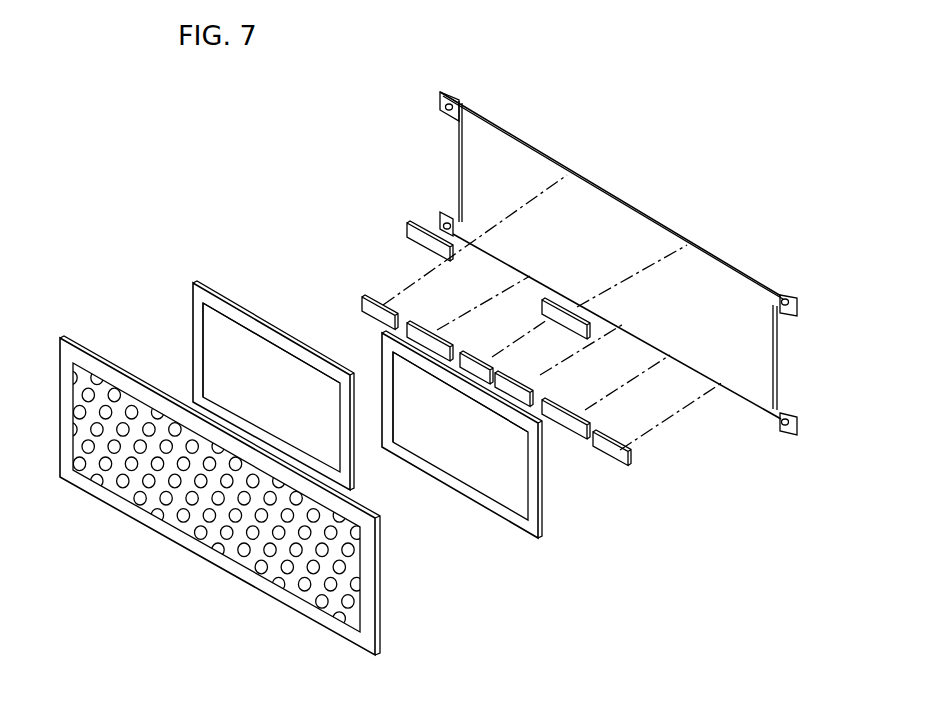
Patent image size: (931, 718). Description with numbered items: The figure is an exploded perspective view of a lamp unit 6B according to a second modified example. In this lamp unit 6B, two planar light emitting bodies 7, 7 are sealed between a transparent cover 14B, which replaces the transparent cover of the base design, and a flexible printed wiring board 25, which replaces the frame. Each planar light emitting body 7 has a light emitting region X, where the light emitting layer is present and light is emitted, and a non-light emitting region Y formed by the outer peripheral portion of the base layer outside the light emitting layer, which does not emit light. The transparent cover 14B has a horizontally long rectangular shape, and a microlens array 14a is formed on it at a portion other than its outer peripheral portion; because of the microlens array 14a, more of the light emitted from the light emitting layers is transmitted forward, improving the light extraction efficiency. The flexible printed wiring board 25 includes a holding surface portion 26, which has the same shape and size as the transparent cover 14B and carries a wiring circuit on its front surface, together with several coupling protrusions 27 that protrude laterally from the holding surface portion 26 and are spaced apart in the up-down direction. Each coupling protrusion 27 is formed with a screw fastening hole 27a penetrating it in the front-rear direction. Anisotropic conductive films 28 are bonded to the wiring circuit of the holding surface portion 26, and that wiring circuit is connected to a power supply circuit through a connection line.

The lamp unit 6B is at (90, 131).
The planar light emitting body 7 is at (213, 295).
The light emitting region X is at (220, 337).
The non-light emitting region Y is at (199, 359).
The transparent cover 14B is at (220, 495).
The microlens array 14a is at (242, 553).
The flexible printed wiring board 25 is at (635, 267).
The holding surface portion 26 is at (646, 224).
The coupling protrusion 27 is at (635, 267).
The screw fastening hole 27a is at (449, 104).
The anisotropic conductive film 28 is at (428, 246).